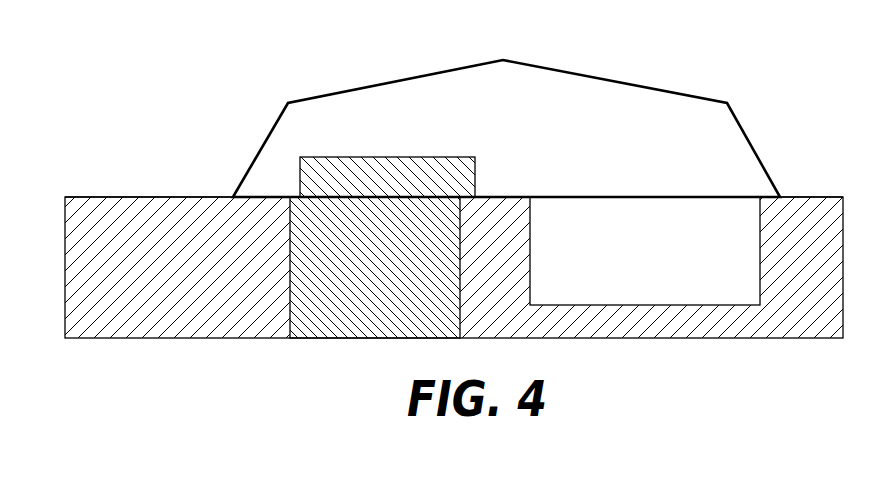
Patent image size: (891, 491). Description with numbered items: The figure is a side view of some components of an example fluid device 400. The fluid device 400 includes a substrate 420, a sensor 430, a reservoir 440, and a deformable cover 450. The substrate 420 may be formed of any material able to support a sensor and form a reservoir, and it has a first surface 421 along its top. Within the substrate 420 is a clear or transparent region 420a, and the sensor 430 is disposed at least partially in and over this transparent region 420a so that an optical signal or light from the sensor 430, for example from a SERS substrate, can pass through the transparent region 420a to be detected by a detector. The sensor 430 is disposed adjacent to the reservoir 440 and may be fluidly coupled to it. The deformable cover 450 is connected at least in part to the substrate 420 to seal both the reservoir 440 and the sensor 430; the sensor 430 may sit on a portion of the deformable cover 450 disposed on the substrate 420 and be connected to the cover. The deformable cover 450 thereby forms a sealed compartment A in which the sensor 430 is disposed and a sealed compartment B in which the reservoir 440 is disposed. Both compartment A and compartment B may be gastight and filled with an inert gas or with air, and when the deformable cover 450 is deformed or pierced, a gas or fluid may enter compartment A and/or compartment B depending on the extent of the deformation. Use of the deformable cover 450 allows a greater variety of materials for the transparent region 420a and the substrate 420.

The fluid device 400 is at (454, 183).
The substrate 420 is at (454, 267).
The transparent region 420a is at (375, 267).
The first surface 421 is at (150, 196).
The sensor 430 is at (387, 177).
The reservoir 440 is at (645, 251).
The deformable cover 450 is at (668, 91).
The sealed compartment A is at (517, 93).
The sealed compartment B is at (625, 225).